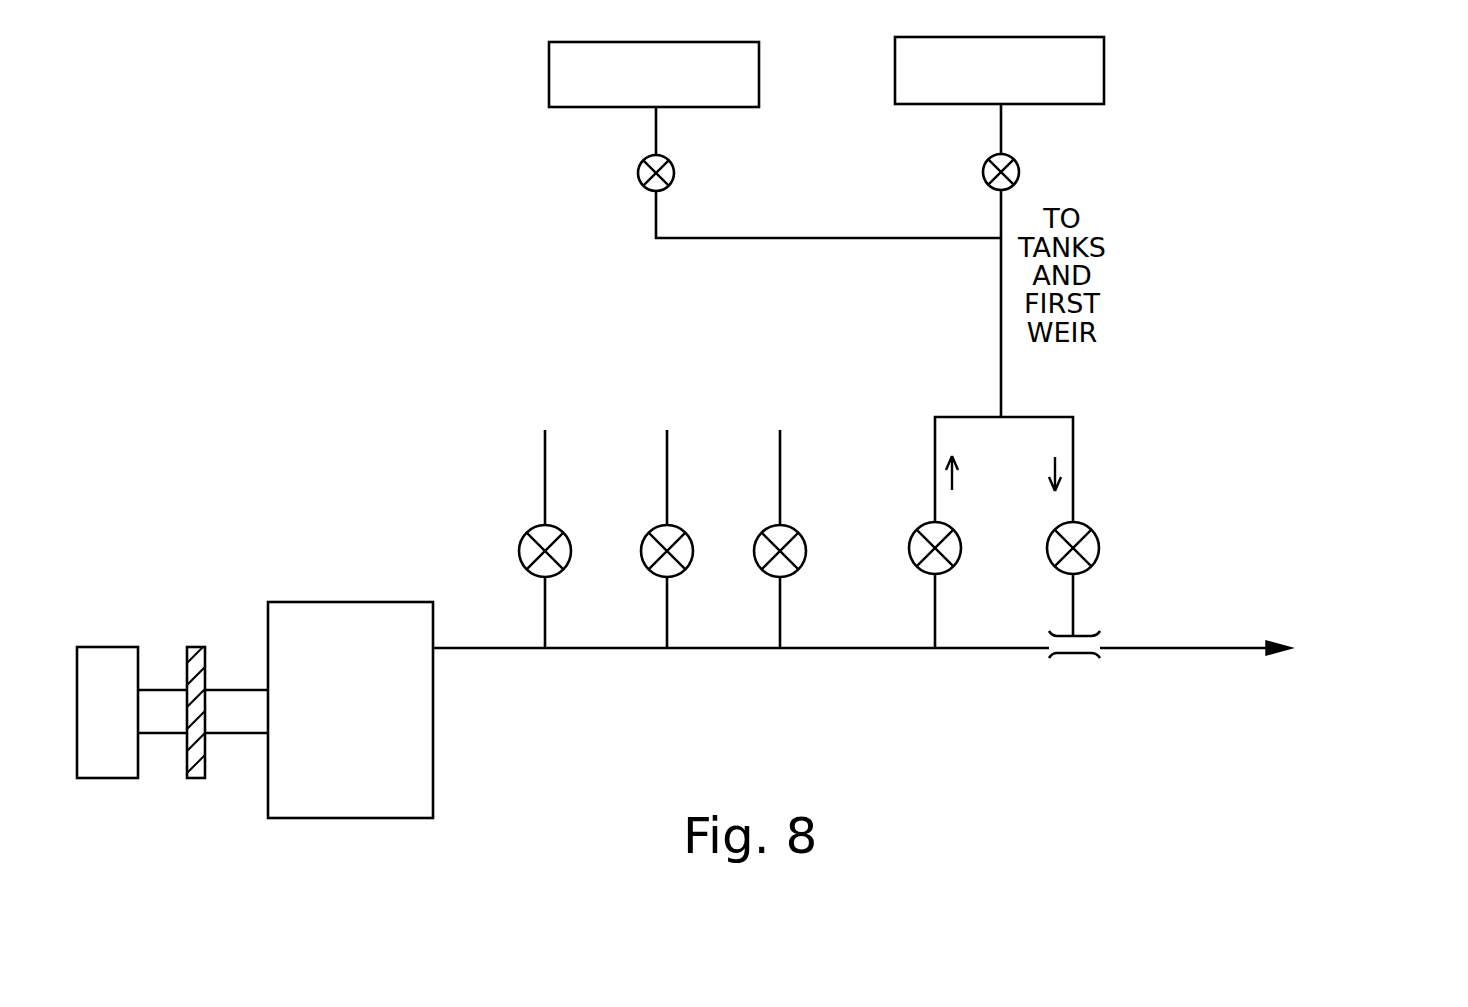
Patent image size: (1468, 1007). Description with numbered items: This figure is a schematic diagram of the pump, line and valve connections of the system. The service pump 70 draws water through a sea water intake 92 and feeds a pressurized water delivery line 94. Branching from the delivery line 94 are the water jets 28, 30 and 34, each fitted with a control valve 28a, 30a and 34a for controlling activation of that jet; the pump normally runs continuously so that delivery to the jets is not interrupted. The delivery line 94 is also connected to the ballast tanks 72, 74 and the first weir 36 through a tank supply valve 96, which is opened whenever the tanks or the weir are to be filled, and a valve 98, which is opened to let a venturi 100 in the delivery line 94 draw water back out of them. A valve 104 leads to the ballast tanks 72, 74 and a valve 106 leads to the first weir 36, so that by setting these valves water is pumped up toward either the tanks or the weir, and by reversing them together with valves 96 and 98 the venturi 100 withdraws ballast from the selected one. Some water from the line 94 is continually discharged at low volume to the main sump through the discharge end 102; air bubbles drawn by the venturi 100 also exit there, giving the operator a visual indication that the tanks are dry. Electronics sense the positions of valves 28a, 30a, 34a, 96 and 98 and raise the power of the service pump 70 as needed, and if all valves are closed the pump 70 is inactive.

The first weir 36 is at (549, 82).
The ballast tank 72 is at (1104, 68).
The ballast tank 74 is at (999, 70).
The valve leading to the first weir 106 is at (676, 182).
The valve leading to the ballast tanks 104 is at (1020, 178).
The water jet 28 is at (543, 457).
The water jet 30 is at (665, 457).
The water jet 34 is at (778, 457).
The control valve 28a is at (518, 552).
The control valve 30a is at (646, 554).
The control valve 34a is at (761, 554).
The tank supply valve 96 is at (909, 548).
The valve 98 is at (1048, 548).
The venturi 100 is at (1073, 660).
The pressurized water delivery line 94 is at (836, 654).
The discharge end 102 is at (1205, 644).
The service pump 70 is at (335, 668).
The sea water intake 92 is at (110, 646).